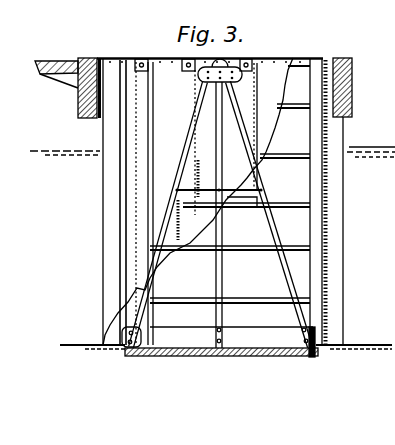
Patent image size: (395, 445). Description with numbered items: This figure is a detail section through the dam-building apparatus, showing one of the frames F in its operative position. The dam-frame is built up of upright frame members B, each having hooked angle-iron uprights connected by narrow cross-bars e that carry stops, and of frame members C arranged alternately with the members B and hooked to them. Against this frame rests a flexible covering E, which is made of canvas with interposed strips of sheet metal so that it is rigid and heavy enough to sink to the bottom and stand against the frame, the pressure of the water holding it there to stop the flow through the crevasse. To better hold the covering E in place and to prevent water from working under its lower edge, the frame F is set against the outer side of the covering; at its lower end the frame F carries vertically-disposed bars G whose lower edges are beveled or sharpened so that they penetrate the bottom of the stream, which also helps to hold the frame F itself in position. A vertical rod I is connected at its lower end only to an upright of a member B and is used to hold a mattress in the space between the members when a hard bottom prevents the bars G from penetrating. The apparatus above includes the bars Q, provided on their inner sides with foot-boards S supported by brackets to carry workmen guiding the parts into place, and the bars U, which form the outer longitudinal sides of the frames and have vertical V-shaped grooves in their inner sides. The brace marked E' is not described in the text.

The foot-boards S is at (62, 63).
The bars Q is at (77, 116).
The bars U is at (351, 58).
The frames F is at (212, 109).
The frame members B is at (206, 201).
The cross-bars e is at (293, 160).
The flexible coverings E is at (174, 155).
The vertical rods I is at (122, 227).
The frame members C is at (330, 206).
The diagonal brace E' is at (217, 228).
The vertically-disposed bars G is at (275, 335).